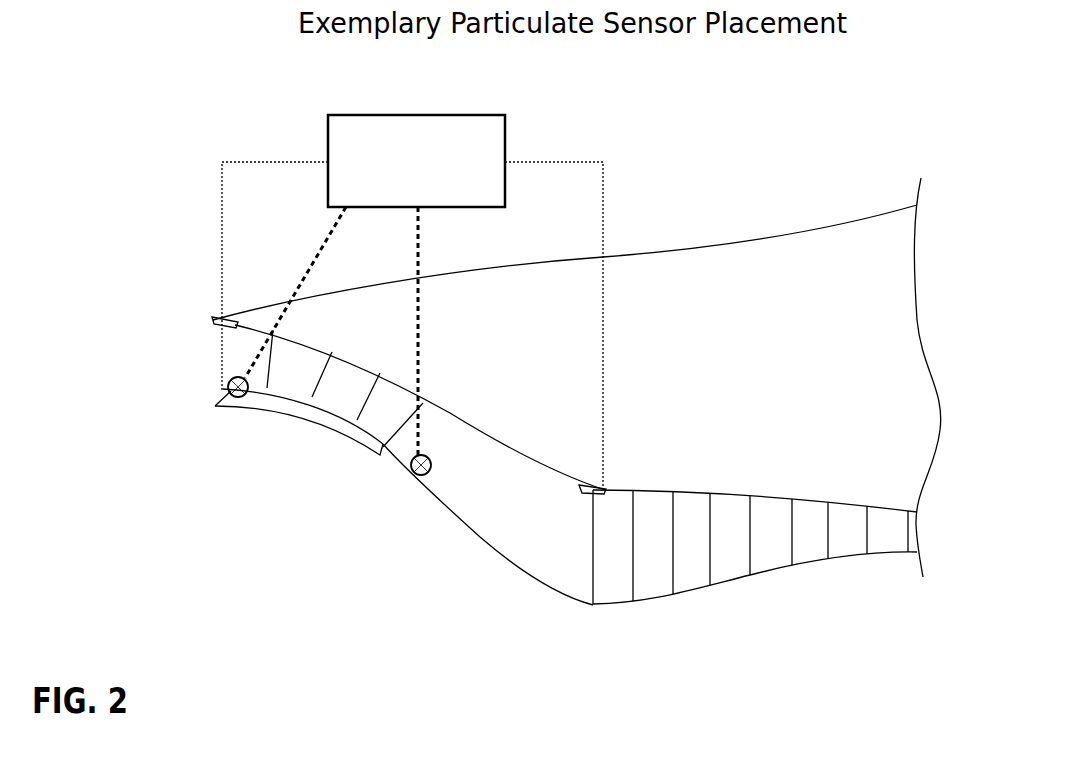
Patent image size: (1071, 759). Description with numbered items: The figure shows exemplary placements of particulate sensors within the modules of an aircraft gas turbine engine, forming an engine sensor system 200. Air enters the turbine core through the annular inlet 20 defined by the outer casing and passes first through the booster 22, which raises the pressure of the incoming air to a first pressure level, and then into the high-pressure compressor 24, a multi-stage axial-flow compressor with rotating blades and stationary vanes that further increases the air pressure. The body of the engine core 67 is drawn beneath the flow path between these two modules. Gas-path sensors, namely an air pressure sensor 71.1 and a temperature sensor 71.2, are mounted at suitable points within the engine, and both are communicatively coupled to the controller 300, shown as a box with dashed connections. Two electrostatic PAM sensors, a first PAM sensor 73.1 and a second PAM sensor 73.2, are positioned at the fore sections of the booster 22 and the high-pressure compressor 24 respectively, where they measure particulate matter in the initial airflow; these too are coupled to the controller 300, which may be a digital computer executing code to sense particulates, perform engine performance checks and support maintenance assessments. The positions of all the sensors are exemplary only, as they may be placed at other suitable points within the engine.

The engine sensor system 200 is at (577, 344).
The controller 300 is at (437, 184).
The annular inlet 20 is at (200, 370).
The booster 22 is at (310, 342).
The high-pressure compressor 24 is at (657, 600).
The engine core body 67 is at (575, 568).
The air pressure sensor 71.1 is at (431, 488).
The temperature sensor 71.2 is at (243, 408).
The PAM sensor 73.1 is at (217, 322).
The PAM sensor 73.2 is at (582, 490).